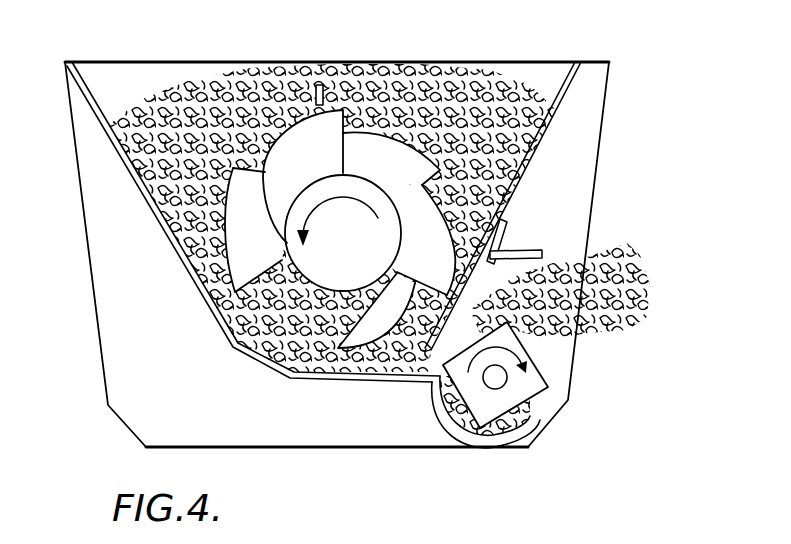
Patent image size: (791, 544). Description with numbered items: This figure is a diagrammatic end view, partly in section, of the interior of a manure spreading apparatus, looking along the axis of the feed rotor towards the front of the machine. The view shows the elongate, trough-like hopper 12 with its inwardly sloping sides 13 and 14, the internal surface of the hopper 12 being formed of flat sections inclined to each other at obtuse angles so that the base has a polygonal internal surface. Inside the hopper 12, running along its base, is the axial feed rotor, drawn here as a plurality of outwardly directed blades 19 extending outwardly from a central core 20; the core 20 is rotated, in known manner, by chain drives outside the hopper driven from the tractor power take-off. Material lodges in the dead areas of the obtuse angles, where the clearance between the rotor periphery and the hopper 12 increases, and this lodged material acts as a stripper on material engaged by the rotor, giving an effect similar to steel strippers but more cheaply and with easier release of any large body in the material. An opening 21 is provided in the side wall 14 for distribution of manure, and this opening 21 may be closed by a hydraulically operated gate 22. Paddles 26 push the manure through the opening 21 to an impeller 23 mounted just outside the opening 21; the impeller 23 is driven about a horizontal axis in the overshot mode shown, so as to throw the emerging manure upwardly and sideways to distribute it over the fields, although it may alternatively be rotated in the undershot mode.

The hopper 12 is at (153, 59).
The inwardly sloping side 13 is at (150, 203).
The inwardly sloping side wall 14 is at (572, 85).
The blade 19 is at (425, 138).
The core 20 is at (383, 181).
The opening 21 is at (420, 372).
The hydraulically operated gate 22 is at (504, 233).
The impeller 23 is at (456, 457).
The paddle 26 is at (332, 80).